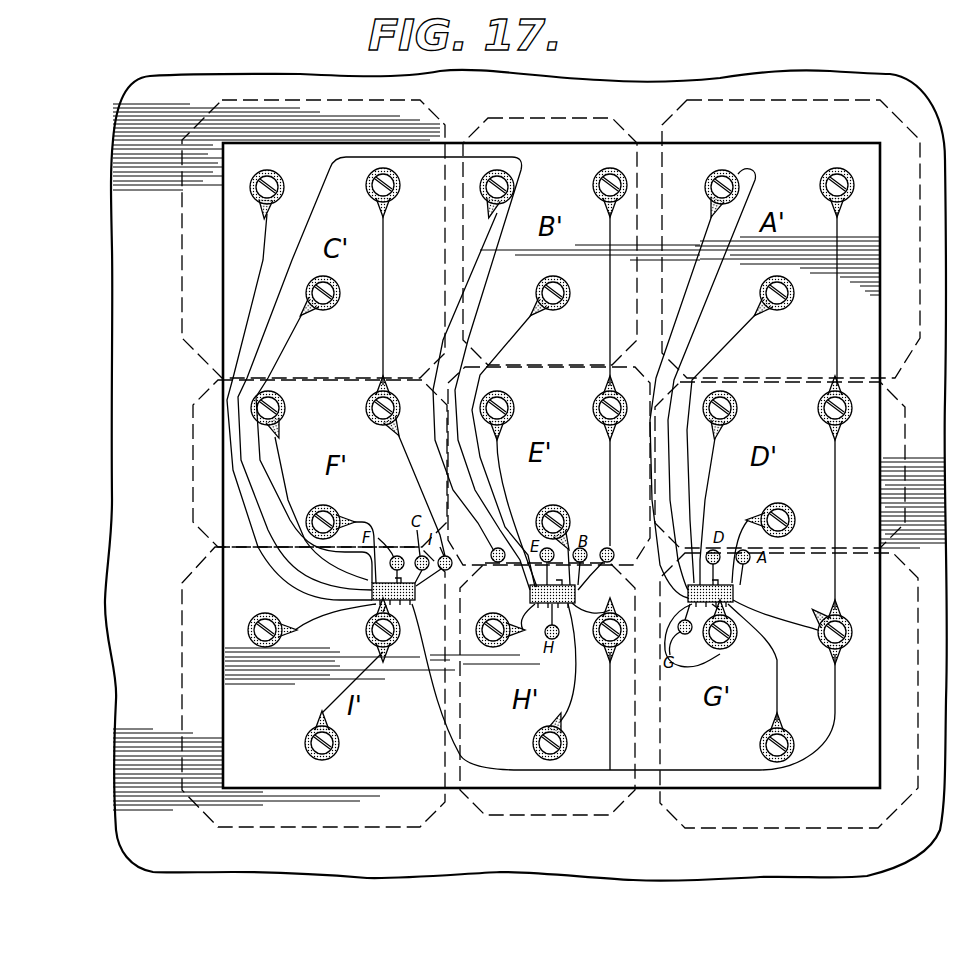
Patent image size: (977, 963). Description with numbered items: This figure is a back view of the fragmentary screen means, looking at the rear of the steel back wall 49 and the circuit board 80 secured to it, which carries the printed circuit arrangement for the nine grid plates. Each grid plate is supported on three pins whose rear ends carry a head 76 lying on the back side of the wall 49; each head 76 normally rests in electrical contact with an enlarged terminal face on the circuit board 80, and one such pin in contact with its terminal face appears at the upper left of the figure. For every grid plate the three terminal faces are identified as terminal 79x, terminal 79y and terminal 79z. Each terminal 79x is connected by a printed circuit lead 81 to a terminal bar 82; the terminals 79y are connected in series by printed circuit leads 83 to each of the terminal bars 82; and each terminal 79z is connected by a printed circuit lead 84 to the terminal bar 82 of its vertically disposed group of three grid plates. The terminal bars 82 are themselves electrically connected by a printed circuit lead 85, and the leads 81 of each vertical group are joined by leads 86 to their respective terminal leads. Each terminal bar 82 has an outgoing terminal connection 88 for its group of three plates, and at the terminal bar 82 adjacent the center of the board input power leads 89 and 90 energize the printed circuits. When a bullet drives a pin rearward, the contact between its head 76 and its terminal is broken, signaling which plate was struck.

The steel back wall 49 is at (795, 76).
The head 76 is at (401, 172).
The terminal 79x is at (285, 189).
The terminal 79y is at (388, 214).
The terminal 79z is at (318, 311).
The circuit board 80 is at (223, 301).
The printed circuit lead 81 is at (263, 243).
The terminal bar 82 is at (372, 590).
The printed circuit lead 83 is at (395, 286).
The printed circuit lead 84 is at (283, 352).
The printed circuit lead 85 is at (540, 170).
The lead 86 is at (788, 620).
The outgoing terminal connection 88 is at (750, 564).
The input power lead 89 is at (500, 547).
The input power lead 90 is at (609, 547).